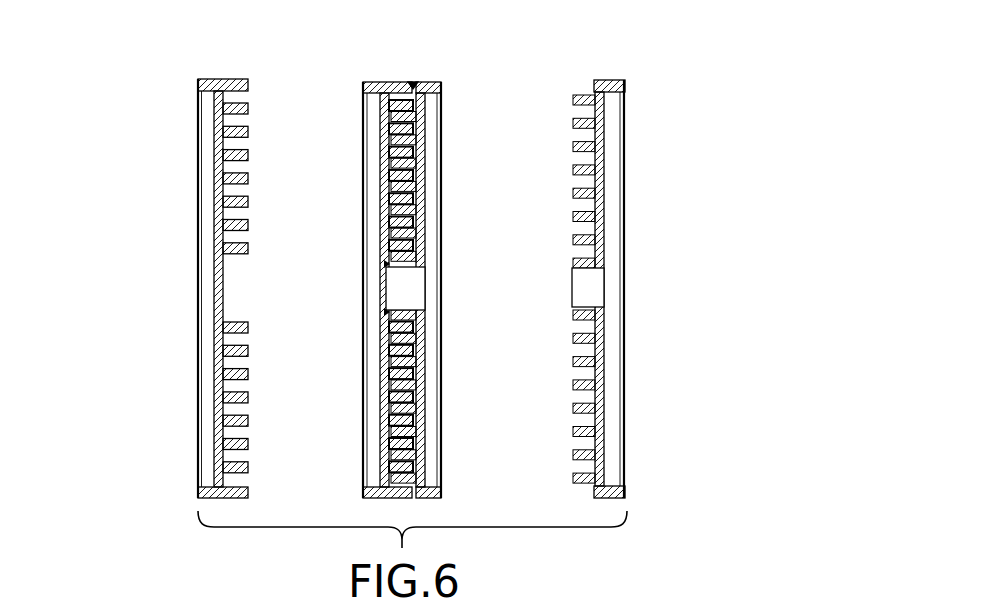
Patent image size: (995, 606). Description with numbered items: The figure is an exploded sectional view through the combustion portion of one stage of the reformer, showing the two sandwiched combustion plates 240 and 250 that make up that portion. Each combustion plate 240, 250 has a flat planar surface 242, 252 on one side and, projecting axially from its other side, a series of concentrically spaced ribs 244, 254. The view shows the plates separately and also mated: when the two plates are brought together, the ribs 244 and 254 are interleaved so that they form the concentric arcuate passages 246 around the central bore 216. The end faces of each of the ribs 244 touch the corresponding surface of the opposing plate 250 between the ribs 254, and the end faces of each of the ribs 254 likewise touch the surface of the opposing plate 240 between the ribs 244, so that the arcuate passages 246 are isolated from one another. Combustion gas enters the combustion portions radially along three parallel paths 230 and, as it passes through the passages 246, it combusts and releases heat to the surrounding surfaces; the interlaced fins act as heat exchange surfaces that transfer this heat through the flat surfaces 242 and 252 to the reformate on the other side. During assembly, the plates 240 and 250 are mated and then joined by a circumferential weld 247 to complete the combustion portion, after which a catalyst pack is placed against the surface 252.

The central bore 216 is at (215, 292).
The parallel paths 230 is at (399, 64).
The combustion plate 240 is at (172, 199).
The flat planar surface 242 is at (214, 151).
The ribs 244 is at (248, 203).
The arcuate passages 246 is at (410, 210).
The circumferential weld 247 is at (414, 83).
The combustion plate 250 is at (635, 242).
The flat planar surface 252 is at (605, 157).
The ribs 254 is at (577, 193).